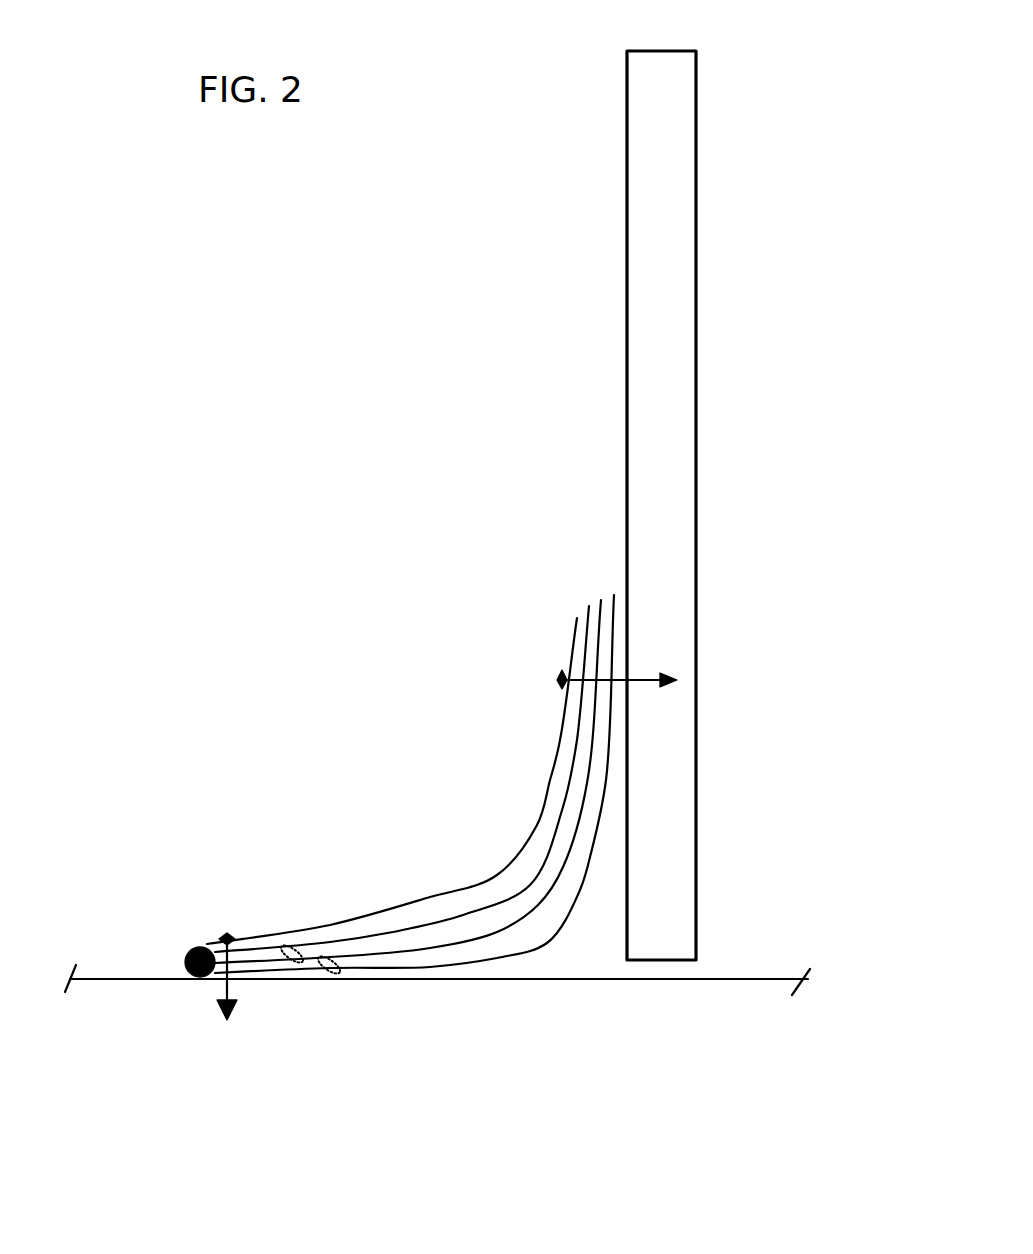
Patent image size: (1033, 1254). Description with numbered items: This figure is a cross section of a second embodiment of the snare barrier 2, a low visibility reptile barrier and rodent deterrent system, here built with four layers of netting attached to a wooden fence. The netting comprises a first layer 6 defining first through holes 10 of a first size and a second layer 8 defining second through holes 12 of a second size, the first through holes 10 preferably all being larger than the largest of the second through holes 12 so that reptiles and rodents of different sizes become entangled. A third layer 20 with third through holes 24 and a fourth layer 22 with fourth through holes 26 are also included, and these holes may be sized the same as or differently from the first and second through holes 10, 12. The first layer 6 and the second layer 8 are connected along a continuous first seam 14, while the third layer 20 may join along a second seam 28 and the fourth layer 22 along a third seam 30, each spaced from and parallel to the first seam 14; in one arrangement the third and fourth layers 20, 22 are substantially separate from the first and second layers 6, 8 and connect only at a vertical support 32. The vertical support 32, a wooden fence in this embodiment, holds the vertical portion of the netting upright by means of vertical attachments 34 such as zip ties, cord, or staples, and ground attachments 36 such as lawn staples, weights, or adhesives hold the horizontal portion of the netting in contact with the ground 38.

The snare barrier 2 is at (243, 523).
The first layer 6 is at (573, 643).
The second layer 8 is at (573, 725).
The first through holes 10 is at (537, 825).
The second through holes 12 is at (393, 932).
The first seam 14 is at (182, 957).
The third layer 20 is at (585, 792).
The fourth layer 22 is at (613, 729).
The third through holes 24 is at (537, 903).
The fourth through holes 26 is at (592, 870).
The second seam 28 is at (276, 956).
The third seam 30 is at (343, 960).
The vertical support 32 is at (624, 372).
The vertical attachments 34 is at (645, 679).
The ground attachments 36 is at (227, 988).
The ground 38 is at (132, 979).